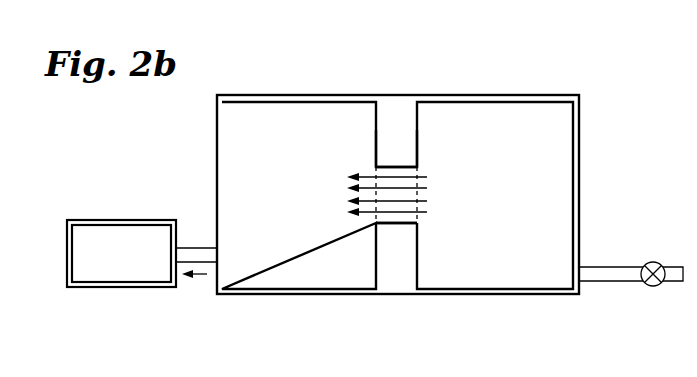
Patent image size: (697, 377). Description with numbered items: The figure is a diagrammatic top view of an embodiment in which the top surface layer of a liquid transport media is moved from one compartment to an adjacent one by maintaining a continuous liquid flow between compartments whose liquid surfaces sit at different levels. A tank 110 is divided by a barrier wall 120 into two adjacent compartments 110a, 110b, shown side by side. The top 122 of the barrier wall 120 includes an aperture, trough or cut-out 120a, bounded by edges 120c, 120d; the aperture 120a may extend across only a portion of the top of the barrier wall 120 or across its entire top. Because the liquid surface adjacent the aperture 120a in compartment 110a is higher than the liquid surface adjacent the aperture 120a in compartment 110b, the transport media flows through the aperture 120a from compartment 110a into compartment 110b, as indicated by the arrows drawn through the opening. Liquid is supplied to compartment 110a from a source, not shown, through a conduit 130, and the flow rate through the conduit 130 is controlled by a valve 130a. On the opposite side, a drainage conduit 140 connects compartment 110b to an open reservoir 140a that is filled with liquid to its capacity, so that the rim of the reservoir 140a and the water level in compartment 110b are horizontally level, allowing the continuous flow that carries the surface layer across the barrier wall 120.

The tank 110 is at (585, 160).
The compartment 110a is at (496, 113).
The compartment 110b is at (268, 113).
The barrier wall 120 is at (385, 113).
The aperture 120a is at (413, 198).
The edge 120c is at (425, 183).
The edge 120d is at (376, 222).
The top of barrier wall 122 is at (404, 152).
The conduit 130 is at (605, 279).
The valve 130a is at (656, 262).
The drainage conduit 140 is at (189, 248).
The open reservoir 140a is at (121, 235).